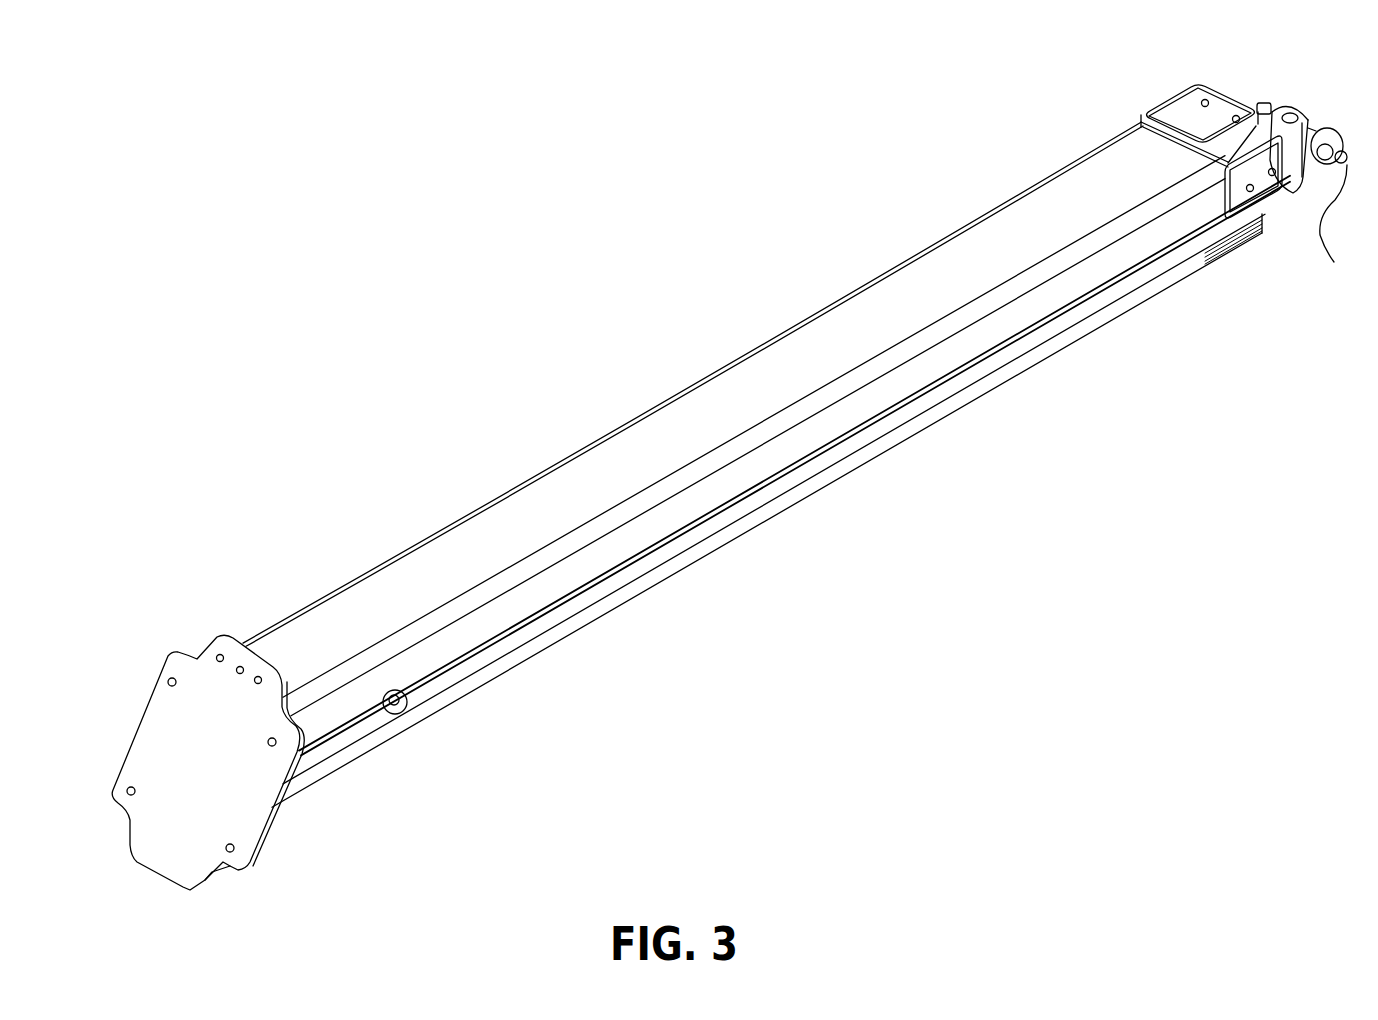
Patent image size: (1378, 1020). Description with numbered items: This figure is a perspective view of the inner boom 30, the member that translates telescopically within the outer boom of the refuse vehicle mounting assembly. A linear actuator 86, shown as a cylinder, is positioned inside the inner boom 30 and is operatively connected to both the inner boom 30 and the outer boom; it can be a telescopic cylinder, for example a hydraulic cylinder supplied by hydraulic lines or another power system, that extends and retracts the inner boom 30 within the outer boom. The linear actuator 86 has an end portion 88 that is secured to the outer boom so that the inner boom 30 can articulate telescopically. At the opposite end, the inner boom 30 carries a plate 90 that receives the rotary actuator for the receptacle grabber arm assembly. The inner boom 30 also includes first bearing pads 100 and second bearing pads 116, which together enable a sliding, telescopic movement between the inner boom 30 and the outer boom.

The inner boom 30 is at (558, 316).
The linear actuator 86 is at (1300, 102).
The end portion 88 is at (1339, 226).
The plate 90 is at (207, 690).
The first bearing pads 100 is at (1190, 108).
The second bearing pads 116 is at (1243, 250).